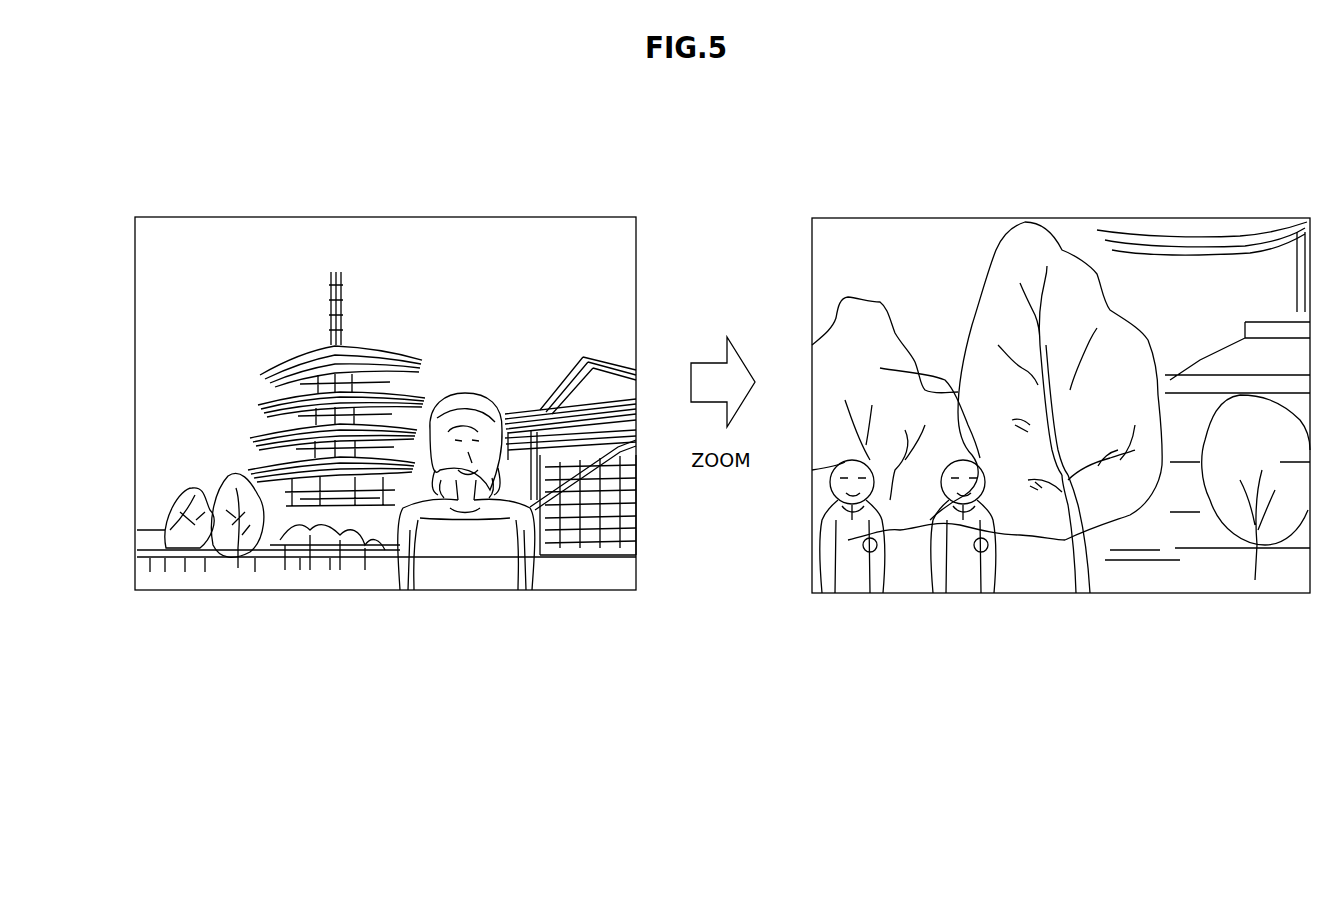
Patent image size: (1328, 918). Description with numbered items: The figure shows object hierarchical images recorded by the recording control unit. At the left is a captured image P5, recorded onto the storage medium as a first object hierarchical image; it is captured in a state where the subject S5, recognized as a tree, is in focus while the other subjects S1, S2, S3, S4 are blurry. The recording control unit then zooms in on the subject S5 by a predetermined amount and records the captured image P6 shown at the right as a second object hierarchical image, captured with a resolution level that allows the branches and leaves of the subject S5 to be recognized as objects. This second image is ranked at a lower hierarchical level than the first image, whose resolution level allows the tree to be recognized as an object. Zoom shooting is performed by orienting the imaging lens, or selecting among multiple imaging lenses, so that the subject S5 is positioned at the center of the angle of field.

The captured image P5 is at (240, 217).
The captured image P6 is at (912, 218).
The subject S1 is at (465, 393).
The subject S2 is at (583, 362).
The subject S3 is at (150, 540).
The subject S4 is at (262, 375).
The subject S5 is at (232, 480).